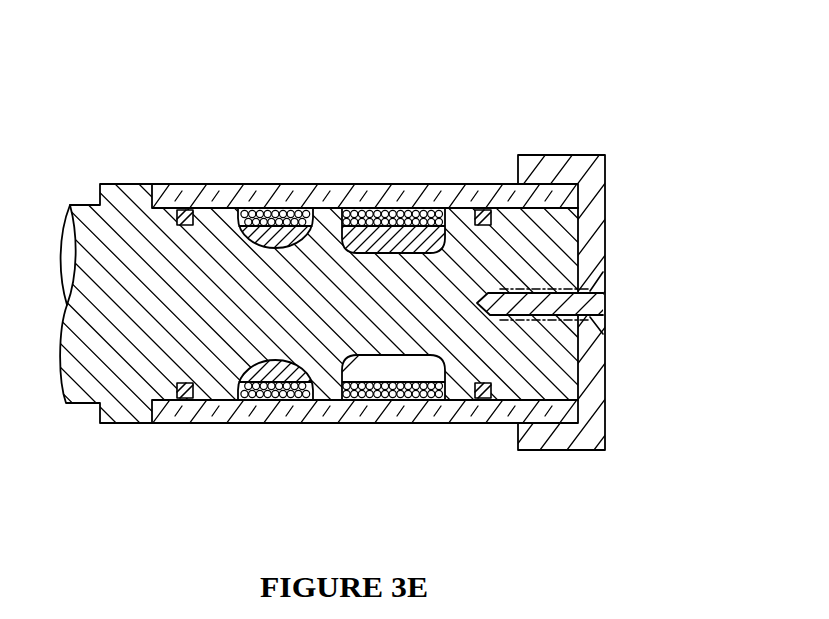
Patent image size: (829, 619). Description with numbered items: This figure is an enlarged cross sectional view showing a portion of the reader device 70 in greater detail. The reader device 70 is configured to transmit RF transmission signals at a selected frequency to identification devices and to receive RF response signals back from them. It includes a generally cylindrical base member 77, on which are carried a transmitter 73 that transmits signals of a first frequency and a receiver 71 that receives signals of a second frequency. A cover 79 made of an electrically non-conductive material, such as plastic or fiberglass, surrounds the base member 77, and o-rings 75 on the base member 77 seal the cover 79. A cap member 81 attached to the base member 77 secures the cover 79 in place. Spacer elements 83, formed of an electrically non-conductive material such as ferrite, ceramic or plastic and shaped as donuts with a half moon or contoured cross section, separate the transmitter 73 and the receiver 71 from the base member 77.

The reader device 70 is at (85, 140).
The receiver 71 is at (413, 397).
The transmitter 73 is at (280, 390).
The o-rings 75 is at (185, 400).
The base member 77 is at (548, 385).
The cover 79 is at (447, 193).
The cap member 81 is at (597, 257).
The spacer elements 83 is at (350, 228).